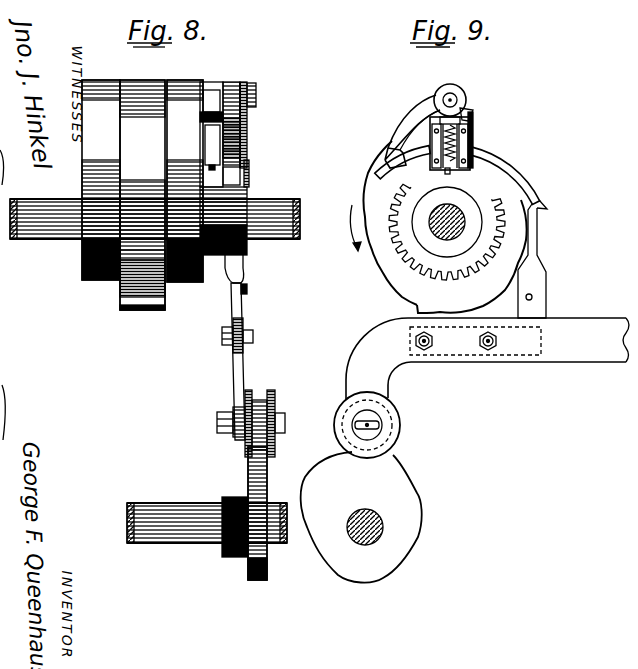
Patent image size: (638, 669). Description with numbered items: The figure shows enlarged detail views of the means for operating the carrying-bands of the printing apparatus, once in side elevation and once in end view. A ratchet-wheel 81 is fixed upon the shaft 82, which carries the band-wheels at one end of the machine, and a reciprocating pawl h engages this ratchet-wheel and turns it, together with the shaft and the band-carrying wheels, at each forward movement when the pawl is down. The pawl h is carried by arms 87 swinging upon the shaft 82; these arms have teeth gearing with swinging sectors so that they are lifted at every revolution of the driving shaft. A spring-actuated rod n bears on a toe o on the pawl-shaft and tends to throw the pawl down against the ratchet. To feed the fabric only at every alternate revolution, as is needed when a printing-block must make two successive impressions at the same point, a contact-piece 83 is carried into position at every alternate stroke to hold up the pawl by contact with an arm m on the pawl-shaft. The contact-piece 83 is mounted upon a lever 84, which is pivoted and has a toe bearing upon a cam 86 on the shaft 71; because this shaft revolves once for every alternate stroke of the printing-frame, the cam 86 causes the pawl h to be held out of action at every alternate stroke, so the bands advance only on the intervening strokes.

In FIG. 8, the shaft 71 is at (157, 495).
In FIG. 9, the shaft 71 is at (350, 520).
In FIG. 8, the ratchet-wheel 81 is at (146, 302).
In FIG. 9, the ratchet-wheel 81 is at (398, 274).
In FIG. 8, the shaft 82 is at (160, 236).
In FIG. 9, the shaft 82 is at (470, 227).
In FIG. 8, the contact-piece 83 is at (257, 173).
In FIG. 9, the contact-piece 83 is at (512, 190).
In FIG. 8, the lever 84 is at (236, 382).
In FIG. 9, the lever 84 is at (481, 388).
In FIG. 8, the cam 86 is at (250, 480).
In FIG. 9, the cam 86 is at (398, 483).
In FIG. 8, the arms 87 is at (142, 181).
In FIG. 9, the arms 87 is at (472, 129).
In FIG. 8, the pawl h is at (142, 195).
In FIG. 9, the pawl h is at (411, 118).
In FIG. 8, the arm m is at (248, 137).
In FIG. 9, the arm m is at (386, 158).
In FIG. 8, the spring-actuated rod n is at (222, 156).
In FIG. 9, the spring-actuated rod n is at (446, 172).
In FIG. 8, the toe o is at (228, 134).
In FIG. 9, the toe o is at (466, 122).